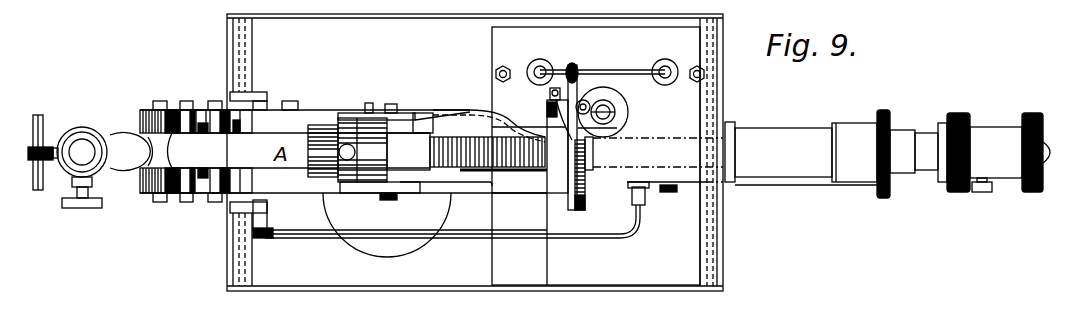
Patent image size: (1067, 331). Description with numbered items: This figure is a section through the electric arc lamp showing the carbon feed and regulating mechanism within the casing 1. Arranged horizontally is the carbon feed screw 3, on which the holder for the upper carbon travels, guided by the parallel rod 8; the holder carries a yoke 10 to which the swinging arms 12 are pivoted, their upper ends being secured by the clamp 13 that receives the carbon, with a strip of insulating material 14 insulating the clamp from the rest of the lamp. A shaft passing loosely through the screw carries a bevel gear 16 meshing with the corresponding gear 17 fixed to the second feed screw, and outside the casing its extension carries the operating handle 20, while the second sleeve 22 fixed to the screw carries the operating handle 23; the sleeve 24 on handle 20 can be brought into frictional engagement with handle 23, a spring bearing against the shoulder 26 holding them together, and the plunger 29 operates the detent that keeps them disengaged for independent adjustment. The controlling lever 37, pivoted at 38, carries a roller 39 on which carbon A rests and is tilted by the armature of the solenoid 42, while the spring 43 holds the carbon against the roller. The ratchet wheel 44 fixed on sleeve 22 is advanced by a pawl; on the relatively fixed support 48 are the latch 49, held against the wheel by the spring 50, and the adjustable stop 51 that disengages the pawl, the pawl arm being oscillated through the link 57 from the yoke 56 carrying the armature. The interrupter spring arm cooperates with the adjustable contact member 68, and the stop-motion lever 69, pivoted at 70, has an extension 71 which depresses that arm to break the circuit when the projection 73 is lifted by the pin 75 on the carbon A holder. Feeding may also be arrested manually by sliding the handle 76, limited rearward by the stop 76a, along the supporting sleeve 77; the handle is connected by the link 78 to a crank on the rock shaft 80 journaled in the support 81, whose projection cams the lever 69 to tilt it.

The frame/casing 1 is at (250, 263).
The carbon feed screw 3 is at (508, 169).
The rod 8 is at (531, 172).
The yoke 10 is at (400, 121).
The swinging arms 12 is at (366, 120).
The clamp 13 is at (372, 142).
The strip of insulating material 14 is at (426, 125).
The bevel gear 16 is at (241, 129).
The bevel gear 17 is at (201, 110).
The operating handle 20 is at (1033, 113).
The second sleeve 22 is at (658, 160).
The operating handle 23 is at (960, 113).
The sleeve 24 is at (1007, 175).
The shoulder 26 is at (1048, 165).
The plunger 29 is at (980, 193).
The controlling lever 37 is at (201, 197).
The pivot 38 is at (253, 100).
The roller 39 is at (148, 182).
The magnet or solenoid 42 is at (387, 225).
The spring 43 is at (405, 188).
The ratchet wheel 44 is at (582, 205).
The relatively fixed support 48 is at (551, 100).
The latch 49 is at (591, 150).
The spring 50 is at (560, 122).
The adjustable stop 51 is at (615, 97).
The yoke 56 is at (627, 73).
The link 57 is at (575, 70).
The adjustable contact member 68 is at (616, 112).
The lever 69 is at (443, 110).
The pivot 70 is at (391, 104).
The extension 71 is at (618, 128).
The projection 73 is at (291, 103).
The pin 75 is at (374, 103).
The handle 76 is at (886, 112).
The stop 76a is at (668, 193).
The supporting sleeve 77 is at (775, 143).
The link 78 is at (603, 240).
The rock shaft 80 is at (270, 214).
The support 81 is at (446, 186).